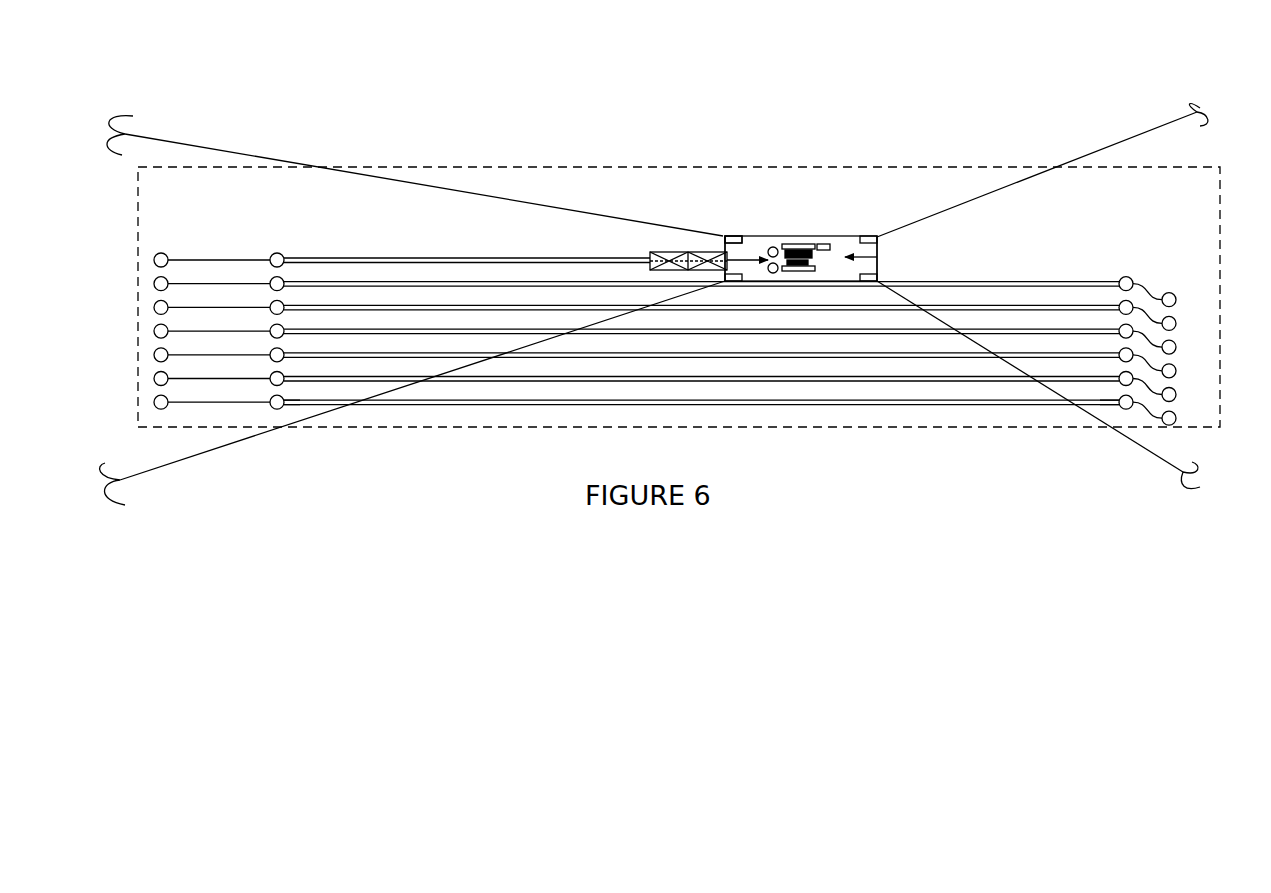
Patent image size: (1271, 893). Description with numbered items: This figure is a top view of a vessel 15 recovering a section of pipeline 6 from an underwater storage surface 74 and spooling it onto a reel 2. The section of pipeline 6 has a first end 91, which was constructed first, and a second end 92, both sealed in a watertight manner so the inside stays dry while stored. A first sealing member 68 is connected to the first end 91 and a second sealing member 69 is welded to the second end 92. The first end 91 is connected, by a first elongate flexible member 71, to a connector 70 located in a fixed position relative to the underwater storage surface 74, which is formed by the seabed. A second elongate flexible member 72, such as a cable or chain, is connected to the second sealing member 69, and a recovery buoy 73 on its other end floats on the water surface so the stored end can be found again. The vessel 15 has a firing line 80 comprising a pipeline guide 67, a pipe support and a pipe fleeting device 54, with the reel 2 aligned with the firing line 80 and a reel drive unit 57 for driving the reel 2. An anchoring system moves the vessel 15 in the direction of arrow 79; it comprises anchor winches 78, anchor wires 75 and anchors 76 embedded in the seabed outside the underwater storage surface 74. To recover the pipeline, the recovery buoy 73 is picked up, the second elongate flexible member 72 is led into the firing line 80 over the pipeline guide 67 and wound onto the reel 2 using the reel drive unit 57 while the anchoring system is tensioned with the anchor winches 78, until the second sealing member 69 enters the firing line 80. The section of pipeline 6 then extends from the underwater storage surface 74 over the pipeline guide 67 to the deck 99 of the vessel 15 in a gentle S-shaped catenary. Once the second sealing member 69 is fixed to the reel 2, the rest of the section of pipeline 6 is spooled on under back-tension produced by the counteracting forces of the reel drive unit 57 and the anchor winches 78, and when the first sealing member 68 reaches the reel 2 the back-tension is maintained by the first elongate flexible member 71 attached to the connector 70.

The reel 2 is at (800, 238).
The section of pipeline 6 is at (800, 384).
The vessel 15 is at (744, 235).
The pipe fleeting device 54 is at (773, 245).
The reel drive unit 57 is at (823, 242).
The pipeline guide 67 is at (667, 250).
The first sealing member 68 is at (279, 253).
The second sealing member 69 is at (1124, 277).
The connector 70 is at (163, 254).
The first elongate flexible member 71 is at (226, 257).
The second elongate flexible member 72 is at (1147, 289).
The recovery buoy 73 is at (1173, 294).
The underwater storage surface 74 is at (521, 165).
The anchor wires 75 is at (1121, 139).
The anchors 76 is at (1198, 101).
The anchor winches 78 is at (727, 234).
The arrow 79 is at (852, 252).
The firing line 80 is at (722, 237).
The first end 91 is at (292, 411).
The second end 92 is at (1115, 410).
The deck 99 is at (880, 264).